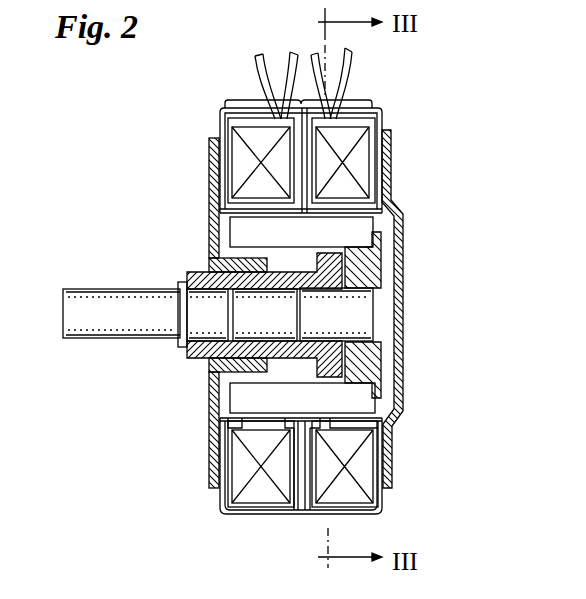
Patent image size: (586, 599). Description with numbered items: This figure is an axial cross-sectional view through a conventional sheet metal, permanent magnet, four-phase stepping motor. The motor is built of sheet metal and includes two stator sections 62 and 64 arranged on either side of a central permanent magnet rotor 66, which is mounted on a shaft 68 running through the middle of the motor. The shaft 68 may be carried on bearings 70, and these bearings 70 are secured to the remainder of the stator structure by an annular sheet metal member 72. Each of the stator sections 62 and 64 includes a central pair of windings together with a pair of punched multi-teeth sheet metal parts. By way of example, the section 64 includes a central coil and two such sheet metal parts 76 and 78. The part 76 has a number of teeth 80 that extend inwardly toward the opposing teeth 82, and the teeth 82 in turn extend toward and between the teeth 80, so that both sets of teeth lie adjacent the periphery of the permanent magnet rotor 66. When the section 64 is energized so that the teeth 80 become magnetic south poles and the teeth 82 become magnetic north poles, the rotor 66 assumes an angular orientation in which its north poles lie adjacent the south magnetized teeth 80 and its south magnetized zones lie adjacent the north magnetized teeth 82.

The stator section 62 is at (212, 499).
The stator section 64 is at (405, 488).
The permanent magnet rotor 66 is at (365, 228).
The shaft 68 is at (113, 296).
The bearings 70 is at (214, 352).
The annular sheet metal member 72 is at (212, 172).
The sheet metal part 76 is at (378, 443).
The sheet metal part 78 is at (310, 488).
The teeth 80 is at (357, 420).
The teeth 82 is at (315, 420).